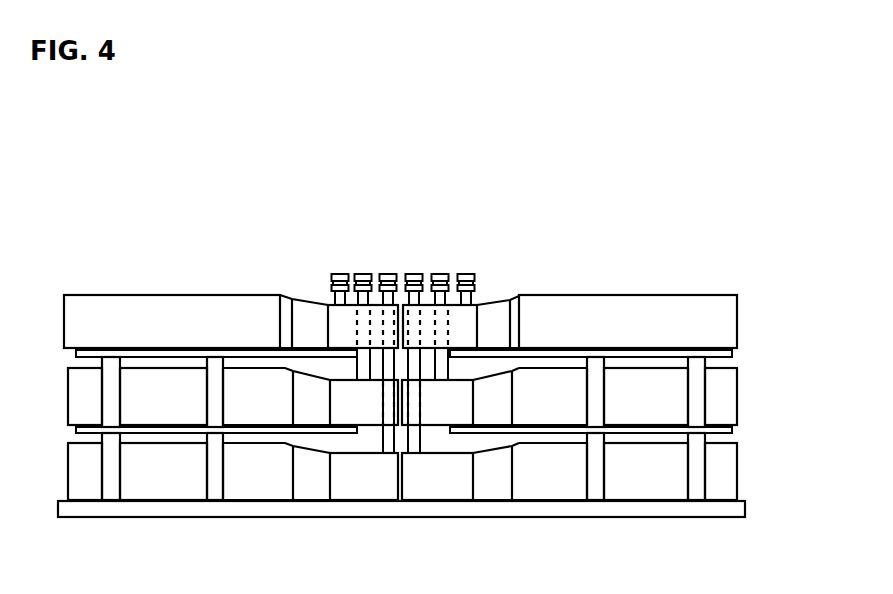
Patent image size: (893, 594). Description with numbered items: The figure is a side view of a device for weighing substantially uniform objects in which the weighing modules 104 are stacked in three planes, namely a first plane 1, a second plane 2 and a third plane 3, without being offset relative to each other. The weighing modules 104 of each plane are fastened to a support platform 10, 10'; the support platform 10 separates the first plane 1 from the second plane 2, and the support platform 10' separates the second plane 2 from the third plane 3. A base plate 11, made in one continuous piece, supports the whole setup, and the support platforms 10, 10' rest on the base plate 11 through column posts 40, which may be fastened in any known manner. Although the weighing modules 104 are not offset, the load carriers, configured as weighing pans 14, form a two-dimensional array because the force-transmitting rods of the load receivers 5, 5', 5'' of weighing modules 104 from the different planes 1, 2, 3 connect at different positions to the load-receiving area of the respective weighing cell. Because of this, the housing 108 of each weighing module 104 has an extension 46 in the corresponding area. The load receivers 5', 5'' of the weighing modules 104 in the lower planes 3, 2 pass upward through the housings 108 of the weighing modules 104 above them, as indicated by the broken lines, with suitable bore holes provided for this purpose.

The first plane 1 is at (426, 288).
The second plane 2 is at (426, 423).
The third plane 3 is at (428, 499).
The load receiver 5 is at (470, 248).
The load receiver 5' is at (445, 248).
The load receiver 5'' is at (419, 248).
The support platform 10 is at (375, 368).
The support platform 10' is at (375, 446).
The base plate 11 is at (92, 508).
The weighing pan 14 is at (390, 273).
The column post 40 is at (112, 488).
The extension 46 is at (352, 327).
The weighing module 104 is at (111, 286).
The housing 108 is at (400, 366).